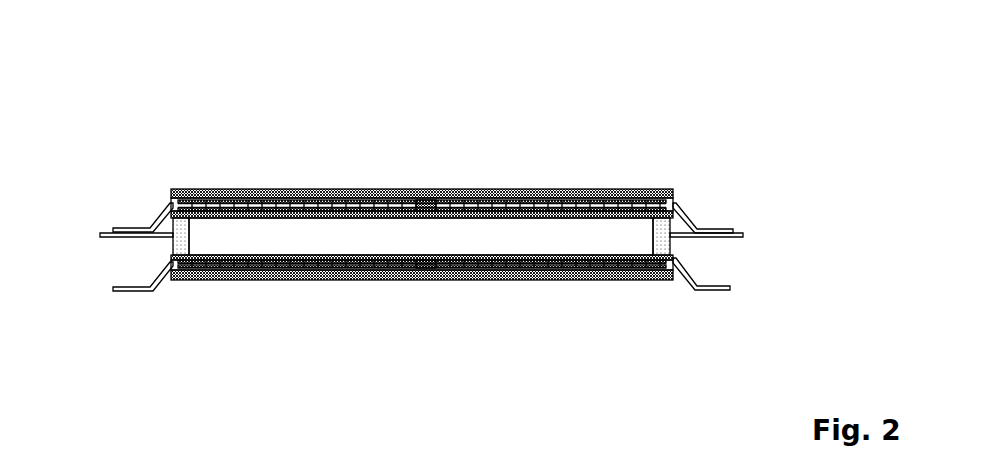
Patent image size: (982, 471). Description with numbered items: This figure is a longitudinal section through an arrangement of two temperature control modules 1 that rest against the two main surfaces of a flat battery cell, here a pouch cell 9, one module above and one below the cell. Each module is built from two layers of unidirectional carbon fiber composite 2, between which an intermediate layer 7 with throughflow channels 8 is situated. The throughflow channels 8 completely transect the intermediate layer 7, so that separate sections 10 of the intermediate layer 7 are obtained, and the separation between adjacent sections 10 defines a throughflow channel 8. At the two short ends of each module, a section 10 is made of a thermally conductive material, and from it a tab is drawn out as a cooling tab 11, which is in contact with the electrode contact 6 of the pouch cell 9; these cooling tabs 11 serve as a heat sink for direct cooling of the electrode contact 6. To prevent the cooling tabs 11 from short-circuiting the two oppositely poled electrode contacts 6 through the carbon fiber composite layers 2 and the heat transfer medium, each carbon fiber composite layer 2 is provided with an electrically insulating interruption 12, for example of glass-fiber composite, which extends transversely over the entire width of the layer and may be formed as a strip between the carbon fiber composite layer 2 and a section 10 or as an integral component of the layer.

The temperature control module 1 is at (213, 212).
The unidirectional carbon fiber composite layer 2 is at (307, 212).
The electrode contact 6 is at (742, 233).
The intermediate layer 7 is at (422, 235).
The section of the intermediate layer 10 is at (536, 205).
The throughflow channel 8 is at (573, 200).
The pouch cell 9 is at (473, 235).
The cooling tab 11 is at (123, 225).
The electrically insulating interruption 12 is at (424, 207).